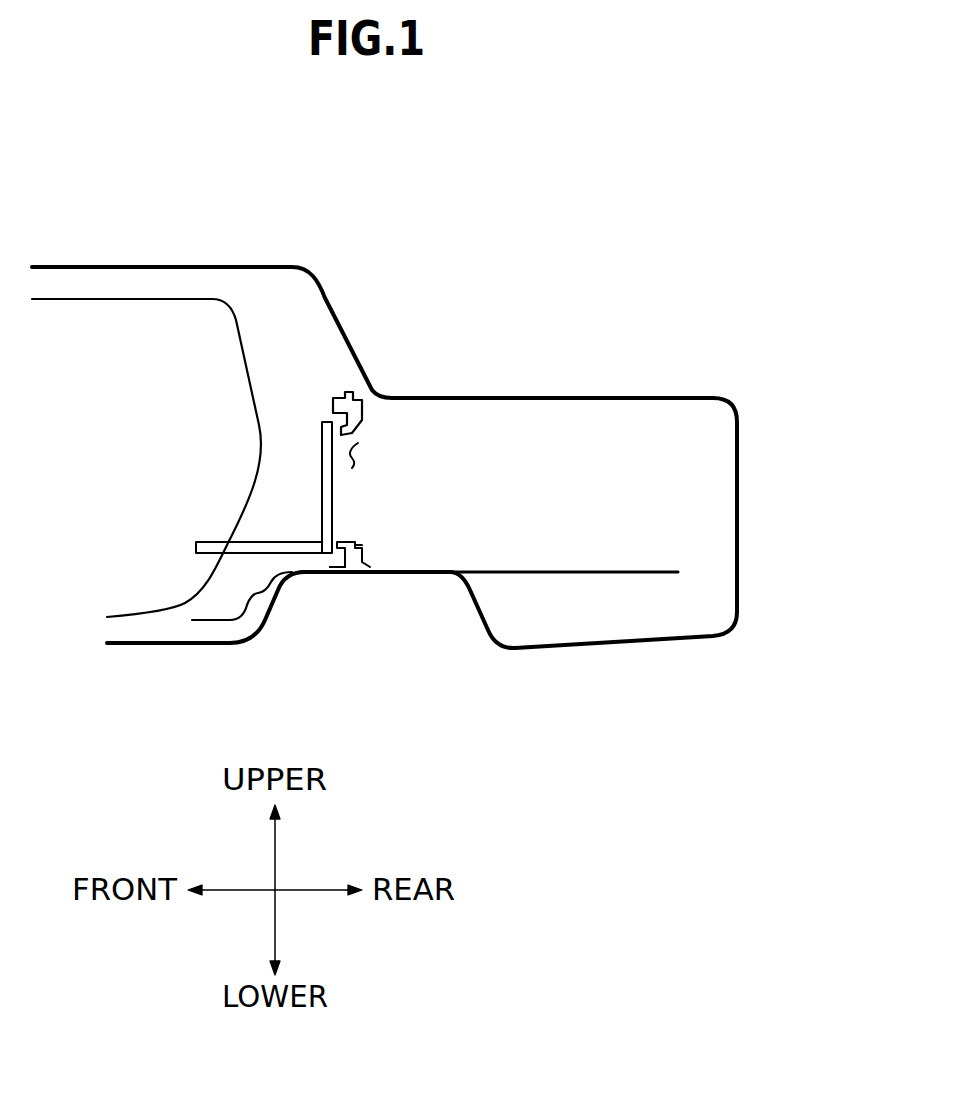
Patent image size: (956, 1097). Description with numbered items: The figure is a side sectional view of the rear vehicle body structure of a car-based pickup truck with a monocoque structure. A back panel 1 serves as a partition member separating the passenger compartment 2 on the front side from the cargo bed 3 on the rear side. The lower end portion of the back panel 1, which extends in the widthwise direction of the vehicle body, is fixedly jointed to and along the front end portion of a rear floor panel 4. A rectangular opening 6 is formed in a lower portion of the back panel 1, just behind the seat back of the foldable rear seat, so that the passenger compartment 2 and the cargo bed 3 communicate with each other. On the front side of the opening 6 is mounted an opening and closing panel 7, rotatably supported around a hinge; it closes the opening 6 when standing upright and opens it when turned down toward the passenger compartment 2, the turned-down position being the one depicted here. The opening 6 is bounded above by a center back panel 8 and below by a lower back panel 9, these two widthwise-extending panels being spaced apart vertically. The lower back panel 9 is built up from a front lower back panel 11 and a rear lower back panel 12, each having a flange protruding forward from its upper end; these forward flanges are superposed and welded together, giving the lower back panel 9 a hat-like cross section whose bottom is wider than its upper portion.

The back panel 1 is at (368, 412).
The passenger compartment 2 is at (138, 384).
The cargo bed 3 is at (650, 386).
The rear floor panel 4 is at (620, 568).
The opening 6 is at (360, 443).
The opening and closing panel 7 is at (218, 535).
The center back panel 8 is at (345, 393).
The lower back panel 9 is at (354, 542).
The front lower back panel 11 is at (343, 568).
The rear lower back panel 12 is at (365, 556).